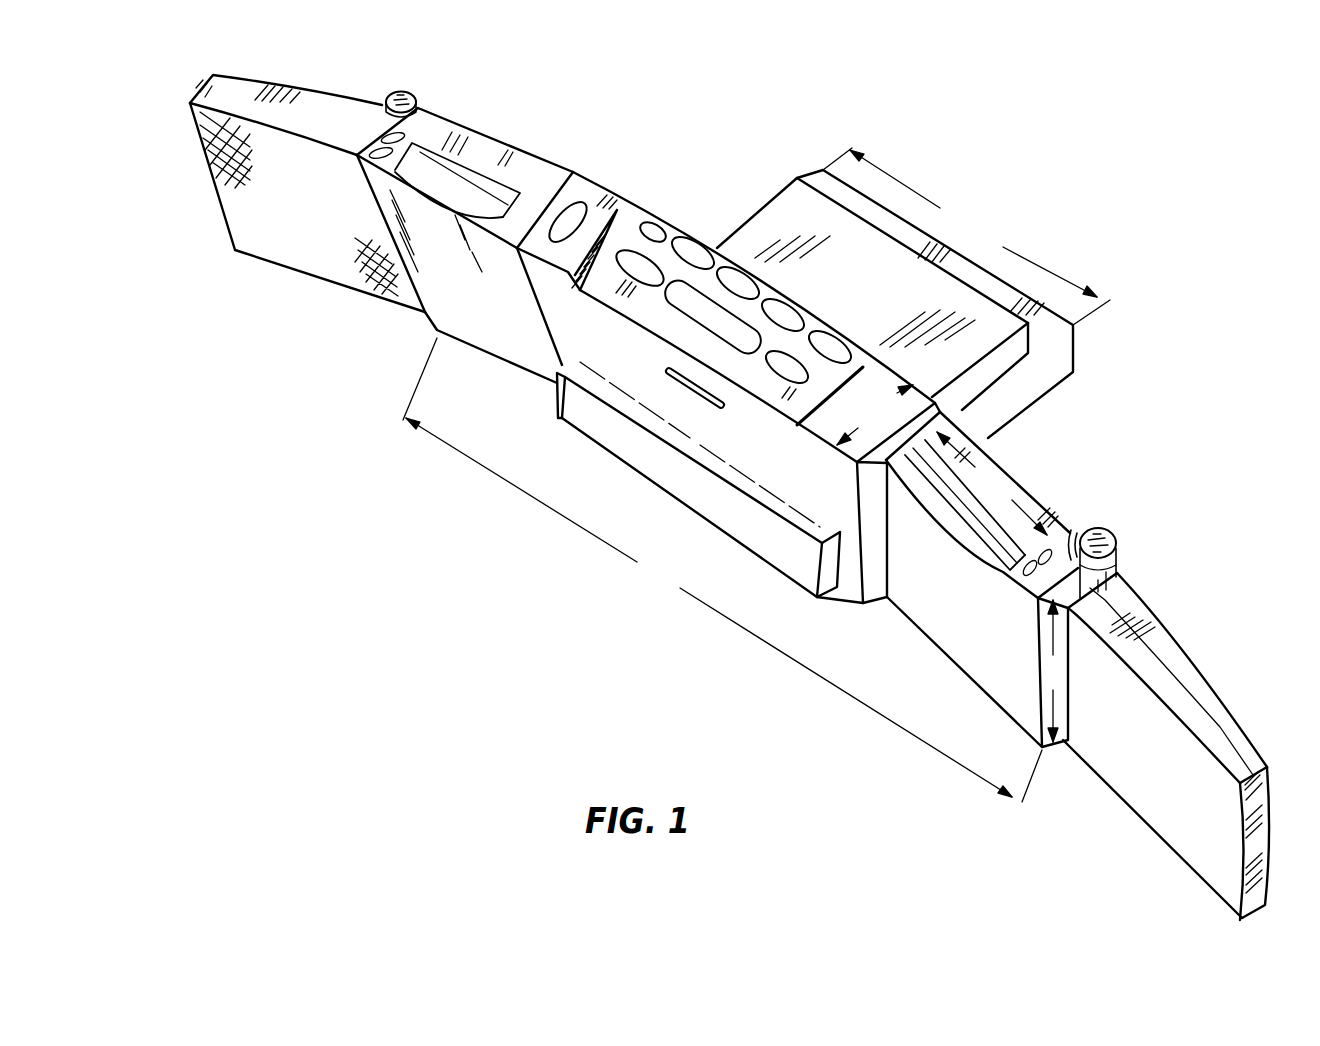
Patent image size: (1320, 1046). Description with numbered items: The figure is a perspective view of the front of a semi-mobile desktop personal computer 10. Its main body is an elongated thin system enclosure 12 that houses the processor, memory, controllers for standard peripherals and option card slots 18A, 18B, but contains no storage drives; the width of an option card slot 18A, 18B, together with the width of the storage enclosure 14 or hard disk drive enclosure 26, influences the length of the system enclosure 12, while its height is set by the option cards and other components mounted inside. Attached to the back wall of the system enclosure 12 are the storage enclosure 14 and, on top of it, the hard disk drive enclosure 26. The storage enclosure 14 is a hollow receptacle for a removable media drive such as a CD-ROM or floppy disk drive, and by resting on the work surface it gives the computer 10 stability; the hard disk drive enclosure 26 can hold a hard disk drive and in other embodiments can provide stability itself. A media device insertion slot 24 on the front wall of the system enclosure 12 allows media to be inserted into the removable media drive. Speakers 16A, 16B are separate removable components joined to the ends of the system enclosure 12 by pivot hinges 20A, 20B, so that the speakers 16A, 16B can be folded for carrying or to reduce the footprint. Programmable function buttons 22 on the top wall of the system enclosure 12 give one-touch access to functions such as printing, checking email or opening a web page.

The semi-mobile desktop personal computer 10 is at (1108, 182).
The system enclosure 12 is at (862, 605).
The storage enclosure 14 is at (1053, 388).
The speaker 16A is at (323, 282).
The speaker 16B is at (1120, 793).
The option card slot 18A is at (467, 168).
The option card slot 18B is at (1057, 547).
The hinge 20A is at (412, 93).
The hinge 20B is at (1118, 545).
The function buttons 22 is at (628, 255).
The media device insertion slot 24 is at (750, 550).
The hard disk drive enclosure 26 is at (772, 190).